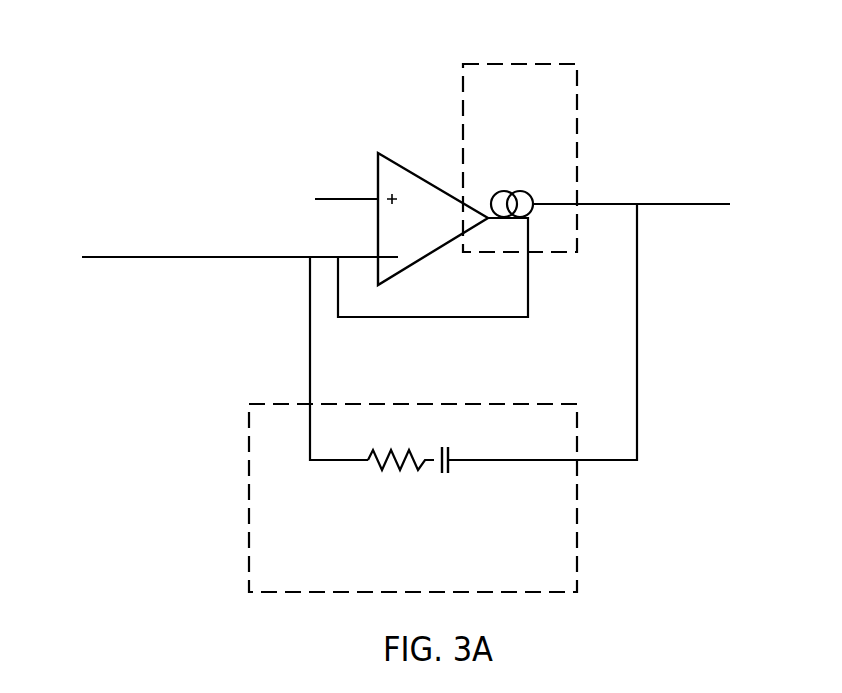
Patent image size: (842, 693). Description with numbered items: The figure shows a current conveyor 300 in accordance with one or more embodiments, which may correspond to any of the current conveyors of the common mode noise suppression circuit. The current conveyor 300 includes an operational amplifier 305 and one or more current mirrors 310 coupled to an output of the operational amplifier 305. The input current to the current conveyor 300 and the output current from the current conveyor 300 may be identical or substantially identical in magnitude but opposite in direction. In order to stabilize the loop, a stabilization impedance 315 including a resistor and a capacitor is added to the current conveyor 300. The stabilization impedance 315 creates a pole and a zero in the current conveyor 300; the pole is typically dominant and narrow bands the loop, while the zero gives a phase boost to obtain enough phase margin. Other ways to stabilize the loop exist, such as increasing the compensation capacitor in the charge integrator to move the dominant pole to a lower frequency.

The current conveyor 300 is at (0, 126).
The operational amplifier 305 is at (440, 186).
The current mirrors 310 is at (535, 164).
The stabilization impedance 315 is at (437, 576).